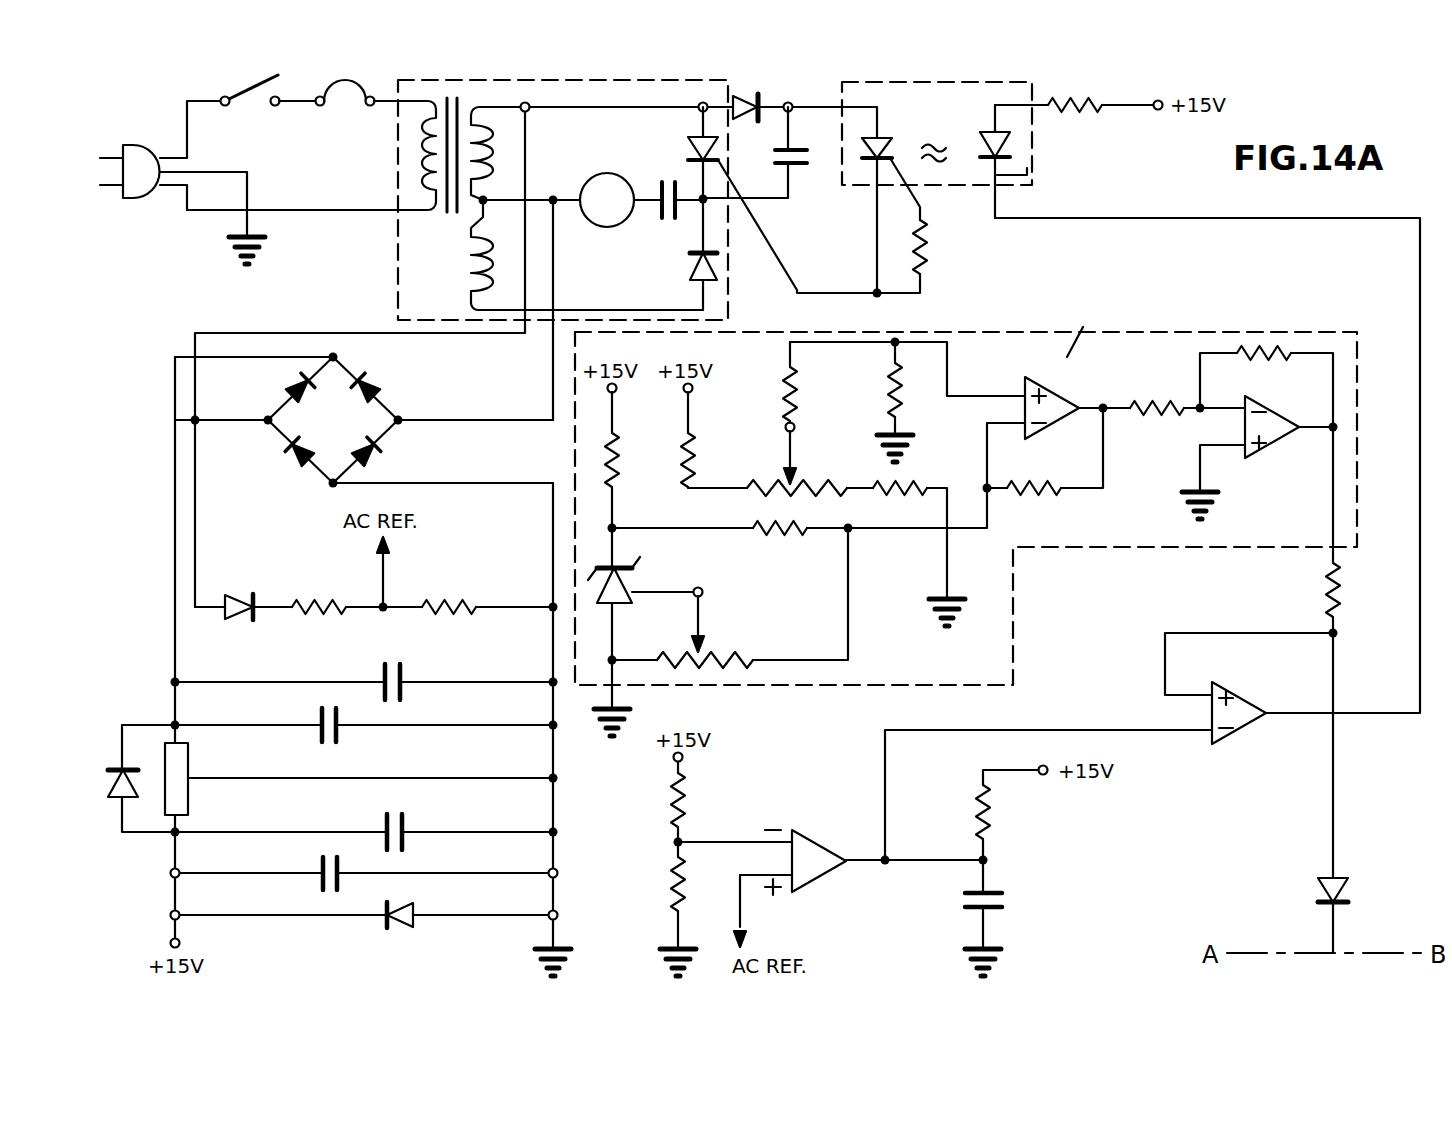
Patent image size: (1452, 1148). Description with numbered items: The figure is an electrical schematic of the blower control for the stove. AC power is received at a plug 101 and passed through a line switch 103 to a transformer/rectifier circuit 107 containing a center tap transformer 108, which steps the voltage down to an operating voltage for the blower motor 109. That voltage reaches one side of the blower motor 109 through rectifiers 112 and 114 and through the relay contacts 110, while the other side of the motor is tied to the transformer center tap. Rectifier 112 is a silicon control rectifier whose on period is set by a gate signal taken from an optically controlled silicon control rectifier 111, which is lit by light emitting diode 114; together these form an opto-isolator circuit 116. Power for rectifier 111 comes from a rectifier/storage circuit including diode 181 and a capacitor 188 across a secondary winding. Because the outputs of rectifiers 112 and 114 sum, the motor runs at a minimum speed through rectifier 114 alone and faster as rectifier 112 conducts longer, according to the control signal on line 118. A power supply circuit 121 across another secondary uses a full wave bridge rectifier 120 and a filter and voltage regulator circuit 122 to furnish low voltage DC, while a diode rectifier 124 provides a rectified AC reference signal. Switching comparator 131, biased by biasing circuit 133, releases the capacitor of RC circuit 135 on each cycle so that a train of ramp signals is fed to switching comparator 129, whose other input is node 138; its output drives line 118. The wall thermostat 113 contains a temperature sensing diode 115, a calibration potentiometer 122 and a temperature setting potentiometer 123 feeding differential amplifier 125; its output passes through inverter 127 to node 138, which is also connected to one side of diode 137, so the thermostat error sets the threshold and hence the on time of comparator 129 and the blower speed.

The plug 101 is at (142, 155).
The line switch 103 is at (243, 101).
The transformer/rectifier circuit 107 is at (412, 260).
The center tap transformer 108 is at (410, 153).
The blower motor 109 is at (608, 172).
The relay contacts 110 is at (660, 212).
The optically controlled silicon control rectifier 111 is at (887, 138).
The silicon control rectifier 112 is at (695, 138).
The wall thermostat 113 is at (1285, 332).
The rectifier / light emitting diode 114 is at (695, 283).
The temperature sensing diode 115 is at (636, 570).
The opto-isolator circuit 116 is at (1027, 168).
The control signal line 118 is at (1120, 218).
The full wave bridge rectifier 120 is at (365, 415).
The power supply circuit 121 is at (175, 427).
The filter and voltage regulator circuit / calibration potentiometer 122 is at (285, 756).
The temperature setting potentiometer 123 is at (785, 446).
The diode rectifier 124 is at (235, 597).
The differential amplifier 125 is at (1052, 393).
The inverter 127 is at (1272, 442).
The switching comparator 129 is at (1235, 735).
The switching comparator 131 is at (806, 855).
The biasing circuit 133 is at (683, 800).
The RC circuit 135 is at (990, 857).
The diode 137 is at (1347, 895).
The node 138 is at (1340, 633).
The diode 181 is at (760, 100).
The capacitor 188 is at (797, 170).